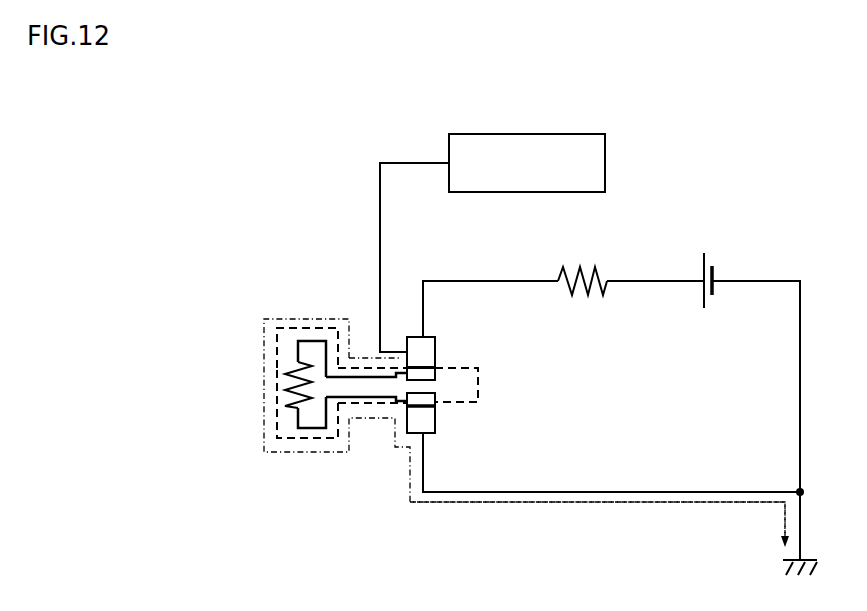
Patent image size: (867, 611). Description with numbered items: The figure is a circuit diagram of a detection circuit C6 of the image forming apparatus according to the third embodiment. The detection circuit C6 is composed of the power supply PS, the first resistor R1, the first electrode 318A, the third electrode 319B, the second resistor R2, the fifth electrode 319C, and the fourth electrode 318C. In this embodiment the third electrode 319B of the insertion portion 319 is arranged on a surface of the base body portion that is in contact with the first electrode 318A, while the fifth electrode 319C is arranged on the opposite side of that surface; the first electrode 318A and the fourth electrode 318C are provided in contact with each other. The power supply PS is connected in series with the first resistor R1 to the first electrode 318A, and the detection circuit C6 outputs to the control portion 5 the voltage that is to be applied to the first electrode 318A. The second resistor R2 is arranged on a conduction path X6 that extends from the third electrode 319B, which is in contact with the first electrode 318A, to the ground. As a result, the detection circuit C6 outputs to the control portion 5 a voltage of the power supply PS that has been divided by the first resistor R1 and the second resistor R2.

The detection circuit C6 is at (672, 120).
The control portion 5 is at (605, 162).
The first resistor R1 is at (606, 290).
The power supply PS is at (715, 293).
The insertion portion 319 is at (307, 329).
The second resistor R2 is at (290, 367).
The first electrode 318A is at (435, 345).
The third electrode 319B is at (435, 374).
The fifth electrode 319C is at (435, 398).
The fourth electrode 318C is at (435, 425).
The conduction path X6 is at (622, 504).